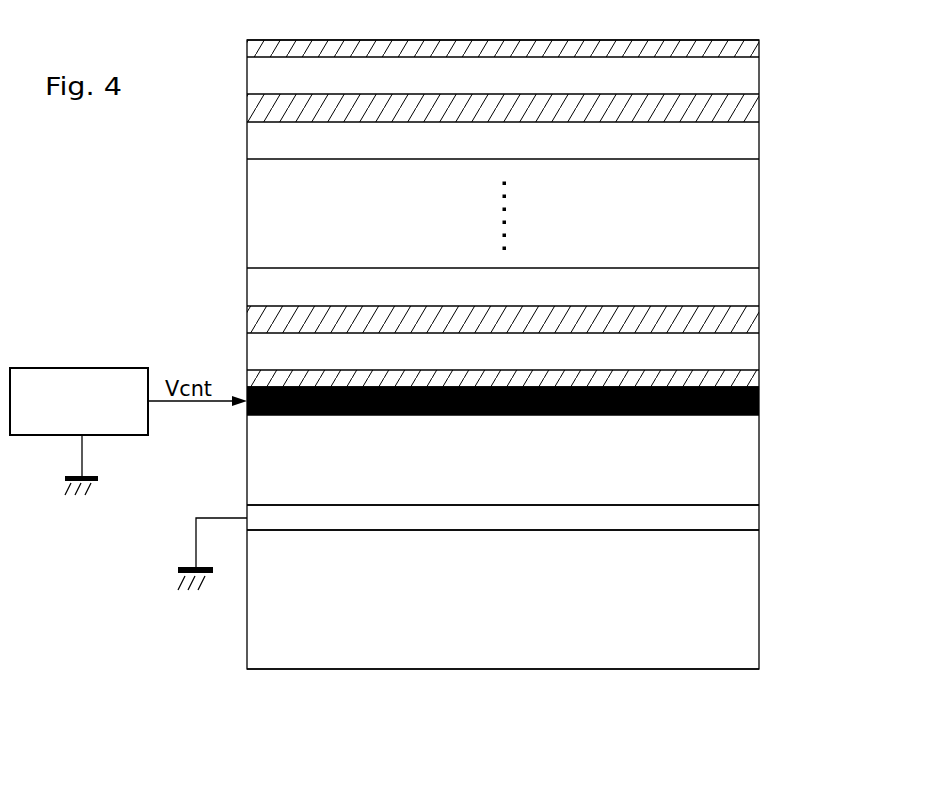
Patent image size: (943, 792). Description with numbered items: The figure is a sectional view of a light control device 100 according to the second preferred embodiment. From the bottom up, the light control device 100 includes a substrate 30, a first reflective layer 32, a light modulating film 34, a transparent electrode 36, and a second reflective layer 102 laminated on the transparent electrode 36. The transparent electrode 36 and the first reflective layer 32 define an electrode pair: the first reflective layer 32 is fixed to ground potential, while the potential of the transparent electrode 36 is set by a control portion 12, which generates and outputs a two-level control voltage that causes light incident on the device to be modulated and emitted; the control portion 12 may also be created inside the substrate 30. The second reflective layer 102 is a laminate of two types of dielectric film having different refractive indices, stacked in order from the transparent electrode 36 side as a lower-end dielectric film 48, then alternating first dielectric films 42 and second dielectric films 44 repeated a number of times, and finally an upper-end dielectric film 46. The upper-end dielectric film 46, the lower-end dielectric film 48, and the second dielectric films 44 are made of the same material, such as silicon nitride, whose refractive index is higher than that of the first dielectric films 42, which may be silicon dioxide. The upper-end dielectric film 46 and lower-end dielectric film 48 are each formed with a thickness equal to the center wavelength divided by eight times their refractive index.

The light control device 100 is at (509, 681).
The second reflective layer 102 is at (817, 42).
The control portion 12 is at (88, 368).
The substrate 30 is at (755, 602).
The first reflective layer 32 is at (755, 518).
The light modulating film 34 is at (755, 460).
The transparent electrode 36 is at (755, 405).
The first dielectric film 42 is at (755, 76).
The second dielectric film 44 is at (755, 108).
The upper-end dielectric film 46 is at (755, 50).
The lower-end dielectric film 48 is at (755, 380).